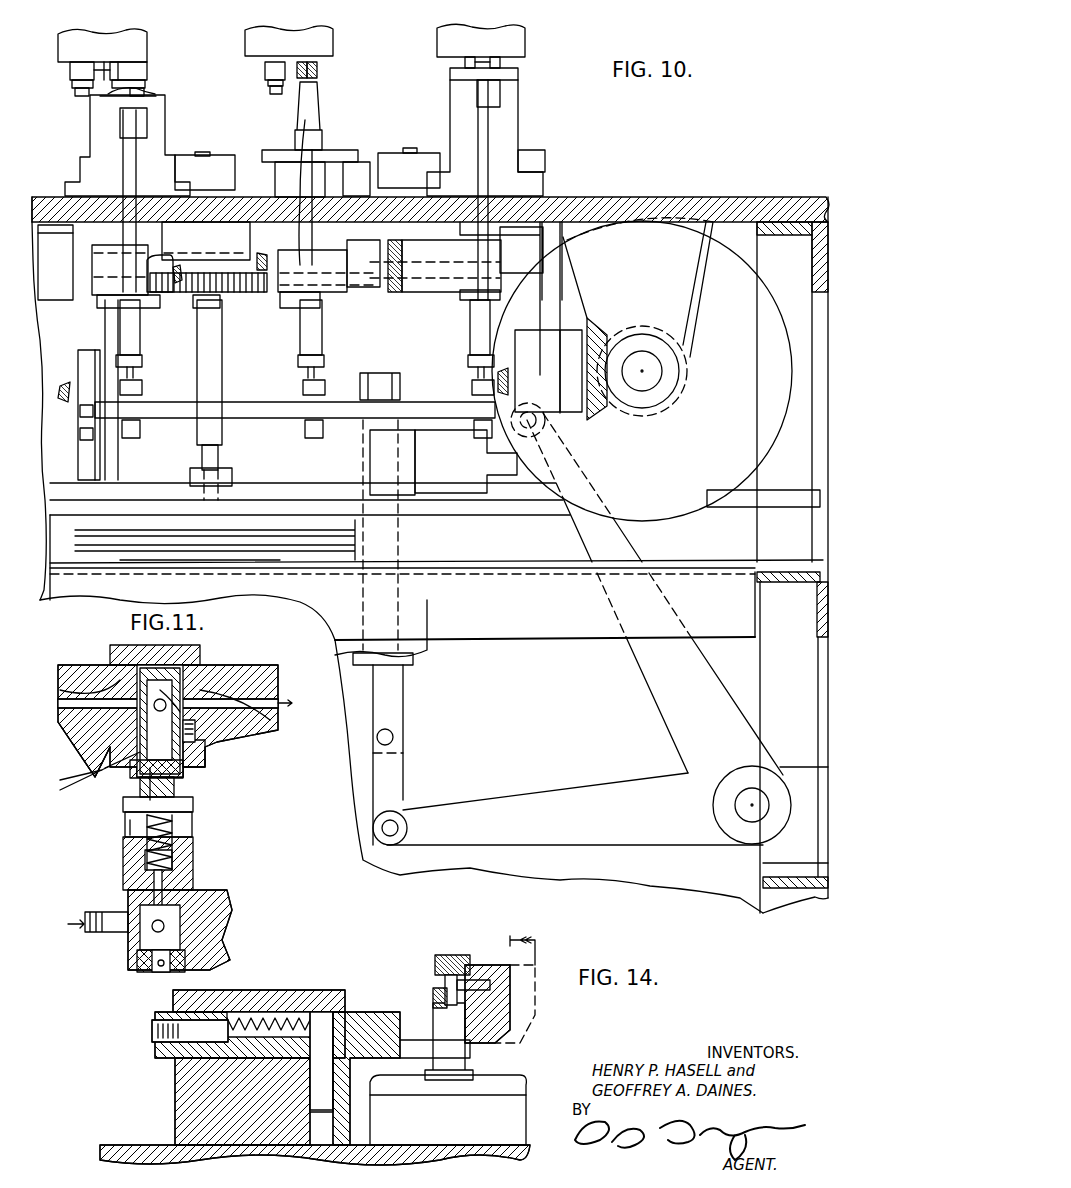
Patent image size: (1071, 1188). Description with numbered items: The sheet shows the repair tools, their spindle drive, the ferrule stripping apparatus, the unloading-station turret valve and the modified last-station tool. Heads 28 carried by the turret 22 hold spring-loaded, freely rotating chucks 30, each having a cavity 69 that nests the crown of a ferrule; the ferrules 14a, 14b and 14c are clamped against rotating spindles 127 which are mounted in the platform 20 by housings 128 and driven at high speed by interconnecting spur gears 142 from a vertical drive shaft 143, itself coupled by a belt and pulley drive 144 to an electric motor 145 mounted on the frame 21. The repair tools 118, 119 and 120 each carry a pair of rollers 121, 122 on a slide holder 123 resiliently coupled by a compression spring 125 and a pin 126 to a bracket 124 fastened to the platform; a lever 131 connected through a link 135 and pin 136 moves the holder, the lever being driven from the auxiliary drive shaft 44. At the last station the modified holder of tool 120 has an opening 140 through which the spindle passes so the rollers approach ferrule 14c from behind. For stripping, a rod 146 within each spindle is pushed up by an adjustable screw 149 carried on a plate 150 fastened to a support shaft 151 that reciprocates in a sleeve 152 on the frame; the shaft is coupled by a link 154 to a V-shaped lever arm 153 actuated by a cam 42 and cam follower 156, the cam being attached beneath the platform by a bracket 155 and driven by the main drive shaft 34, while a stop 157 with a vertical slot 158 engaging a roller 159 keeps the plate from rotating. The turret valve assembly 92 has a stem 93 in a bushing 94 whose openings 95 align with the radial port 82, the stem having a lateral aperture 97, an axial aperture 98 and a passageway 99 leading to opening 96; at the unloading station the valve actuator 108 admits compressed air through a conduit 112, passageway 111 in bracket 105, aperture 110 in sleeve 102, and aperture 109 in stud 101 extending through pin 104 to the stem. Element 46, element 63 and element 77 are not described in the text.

In FIG. 10, the platform 20 is at (668, 196).
In FIG. 14, the platform 20 is at (135, 1152).
In FIG. 10, the frame 21 is at (760, 656).
In FIG. 11, the turret 22 is at (235, 665).
In FIG. 10, the head 28 is at (148, 38).
In FIG. 10, the chuck 30 is at (72, 72).
In FIG. 14, the chuck 30 is at (429, 966).
In FIG. 10, the main drive shaft 34 is at (652, 382).
In FIG. 10, the cam 42 is at (676, 512).
In FIG. 10, the auxiliary drive shaft 44 is at (78, 364).
In FIG. 10, the hub 46 is at (640, 330).
In FIG. 10, the block 63 is at (465, 482).
In FIG. 10, the cavity 69 is at (318, 76).
In FIG. 10, the bushing 77 is at (310, 64).
In FIG. 11, the radial port 82 is at (100, 702).
In FIG. 11, the valve assembly 92 is at (84, 783).
In FIG. 11, the valve stem 93 is at (210, 722).
In FIG. 11, the bushing 94 is at (192, 668).
In FIG. 11, the openings 95 is at (108, 668).
In FIG. 11, the opening 96 is at (195, 760).
In FIG. 11, the laterally extending aperture 97 is at (142, 662).
In FIG. 11, the axially extending aperture 98 is at (185, 772).
In FIG. 11, the laterally extending passageway 99 is at (100, 745).
In FIG. 11, the stud 101 is at (110, 784).
In FIG. 11, the sleeve 102 is at (125, 860).
In FIG. 11, the pin 104 is at (180, 790).
In FIG. 11, the bracket 105 is at (228, 914).
In FIG. 11, the valve actuator 108 is at (193, 850).
In FIG. 11, the aperture 109 is at (148, 790).
In FIG. 11, the aperture 110 is at (165, 880).
In FIG. 11, the passageway 111 is at (140, 948).
In FIG. 11, the conduit 112 is at (95, 934).
In FIG. 10, the repair tool 118 is at (551, 130).
In FIG. 10, the repair tool 119 is at (262, 172).
In FIG. 10, the repair tool 120 is at (78, 148).
In FIG. 14, the repair tool 120 is at (180, 1080).
In FIG. 10, the roller 121 is at (113, 82).
In FIG. 14, the roller 121 is at (478, 968).
In FIG. 10, the roller 122 is at (147, 90).
In FIG. 14, the slide holder 123 is at (355, 1012).
In FIG. 14, the bracket 124 is at (185, 1094).
In FIG. 14, the compression spring 125 is at (250, 1012).
In FIG. 14, the pin 126 is at (316, 1012).
In FIG. 10, the spindle 127 is at (310, 108).
In FIG. 14, the spindle 127 is at (465, 1040).
In FIG. 10, the housing 128 is at (178, 156).
In FIG. 14, the housing 128 is at (515, 1098).
In FIG. 10, the lever 131 is at (318, 220).
In FIG. 10, the link 135 is at (147, 122).
In FIG. 14, the pin 136 is at (150, 1034).
In FIG. 14, the opening 140 is at (410, 1040).
In FIG. 10, the spur gears 142 is at (270, 296).
In FIG. 10, the vertical drive shaft 143 is at (222, 368).
In FIG. 10, the belt and pulley drive 144 is at (268, 520).
In FIG. 10, the electric motor 145 is at (428, 640).
In FIG. 10, the rod 146 is at (138, 374).
In FIG. 14, the rod 146 is at (442, 958).
In FIG. 10, the adjustable screw 149 is at (142, 396).
In FIG. 10, the plate 150 is at (247, 412).
In FIG. 10, the support shaft 151 is at (400, 426).
In FIG. 10, the sleeve 152 is at (410, 470).
In FIG. 10, the V-shaped lever arm 153 is at (655, 786).
In FIG. 10, the link 154 is at (395, 768).
In FIG. 10, the bracket 155 is at (708, 200).
In FIG. 10, the cam follower 156 is at (565, 448).
In FIG. 10, the stop 157 is at (84, 476).
In FIG. 10, the vertical slot 158 is at (80, 436).
In FIG. 10, the roller 159 is at (80, 414).
In FIG. 10, the ferrule 14a is at (75, 95).
In FIG. 10, the ferrule 14b is at (72, 84).
In FIG. 10, the ferrule 14c is at (118, 98).
In FIG. 14, the ferrule 14c is at (440, 990).